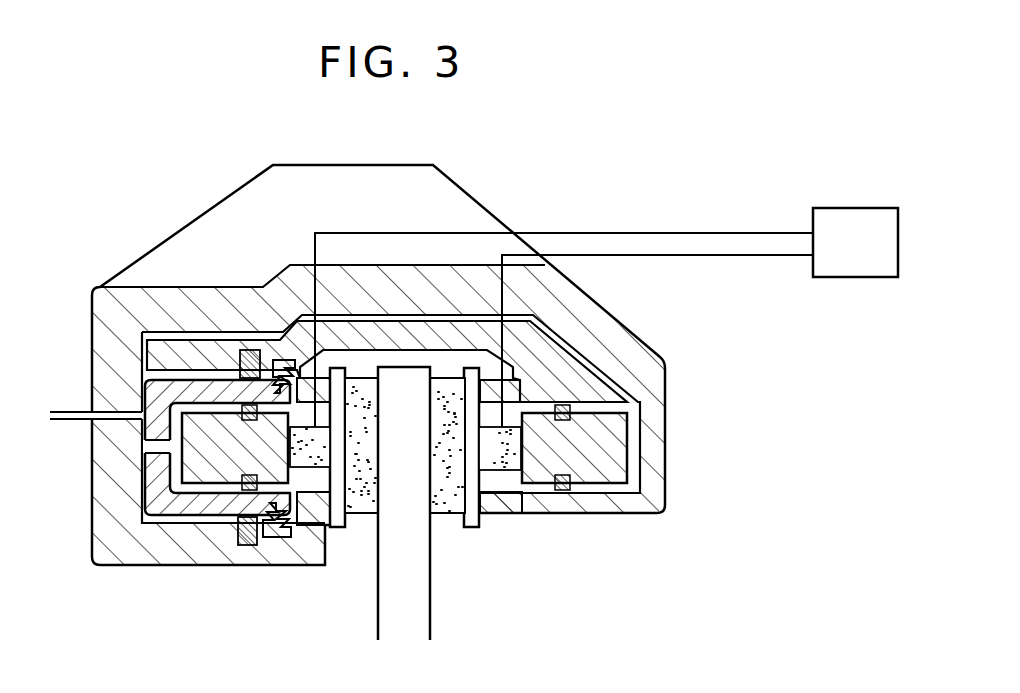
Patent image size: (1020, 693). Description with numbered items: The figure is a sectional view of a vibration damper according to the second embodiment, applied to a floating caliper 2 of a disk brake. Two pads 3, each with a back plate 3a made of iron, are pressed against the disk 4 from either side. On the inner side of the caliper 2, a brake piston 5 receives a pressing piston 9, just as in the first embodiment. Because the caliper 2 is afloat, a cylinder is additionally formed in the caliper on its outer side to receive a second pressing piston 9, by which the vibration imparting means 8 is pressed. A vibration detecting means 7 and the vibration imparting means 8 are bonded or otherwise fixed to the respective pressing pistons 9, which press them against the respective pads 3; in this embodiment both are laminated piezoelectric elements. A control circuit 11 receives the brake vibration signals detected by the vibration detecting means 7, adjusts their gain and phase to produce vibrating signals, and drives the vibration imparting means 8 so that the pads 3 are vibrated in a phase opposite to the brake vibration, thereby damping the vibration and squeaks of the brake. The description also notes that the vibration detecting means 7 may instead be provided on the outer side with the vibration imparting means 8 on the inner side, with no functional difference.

The floating caliper 2 is at (607, 340).
The pad 3 is at (365, 527).
The back plate 3a is at (338, 528).
The disk 4 is at (418, 615).
The brake piston 5 is at (152, 477).
The vibration detecting means 7 is at (316, 455).
The vibration imparting means 8 is at (497, 493).
The pressing piston 9 is at (213, 470).
The control circuit 11 is at (852, 217).